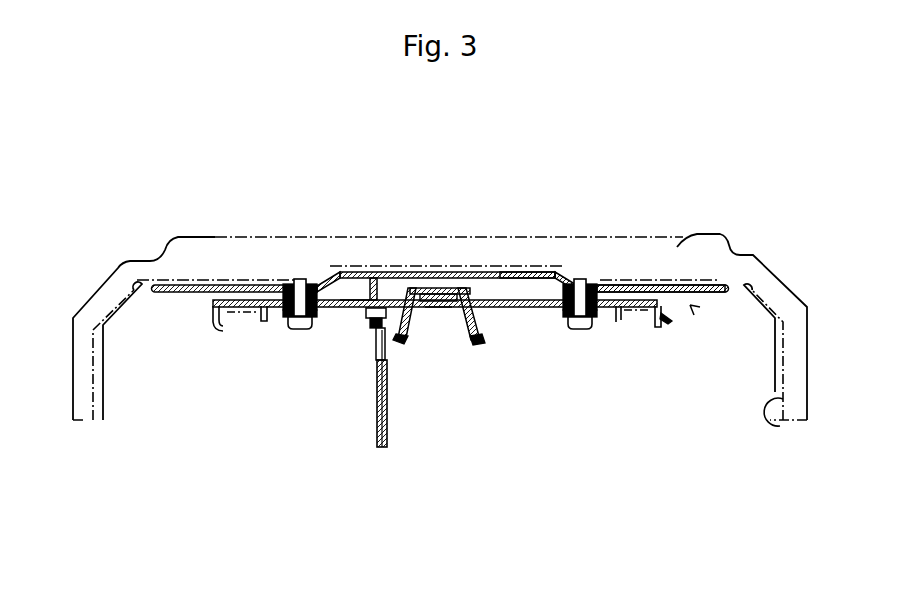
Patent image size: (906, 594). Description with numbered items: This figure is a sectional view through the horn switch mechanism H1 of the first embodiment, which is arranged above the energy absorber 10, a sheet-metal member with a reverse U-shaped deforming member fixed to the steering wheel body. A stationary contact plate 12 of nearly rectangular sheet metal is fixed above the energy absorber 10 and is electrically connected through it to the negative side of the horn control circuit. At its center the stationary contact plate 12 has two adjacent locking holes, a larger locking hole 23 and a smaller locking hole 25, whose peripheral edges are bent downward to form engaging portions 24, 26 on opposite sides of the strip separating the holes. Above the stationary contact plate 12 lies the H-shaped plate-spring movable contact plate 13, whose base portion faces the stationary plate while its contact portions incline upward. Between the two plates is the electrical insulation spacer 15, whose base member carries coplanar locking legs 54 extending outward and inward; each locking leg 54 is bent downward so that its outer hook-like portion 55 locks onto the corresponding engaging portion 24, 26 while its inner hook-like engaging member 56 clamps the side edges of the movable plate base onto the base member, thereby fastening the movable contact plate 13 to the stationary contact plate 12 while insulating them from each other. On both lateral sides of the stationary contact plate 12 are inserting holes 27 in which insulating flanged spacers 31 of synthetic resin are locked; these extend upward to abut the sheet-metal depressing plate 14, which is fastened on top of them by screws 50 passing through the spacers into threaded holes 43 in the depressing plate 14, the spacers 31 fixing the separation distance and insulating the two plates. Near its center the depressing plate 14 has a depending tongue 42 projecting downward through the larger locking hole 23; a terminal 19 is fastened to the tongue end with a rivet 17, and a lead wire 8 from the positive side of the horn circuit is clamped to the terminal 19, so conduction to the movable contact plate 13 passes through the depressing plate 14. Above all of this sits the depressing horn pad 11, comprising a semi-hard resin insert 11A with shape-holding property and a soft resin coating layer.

The lead wire 8 is at (390, 447).
The energy absorber 10 is at (210, 330).
The depressing horn pad 11 is at (692, 237).
The insert 11A is at (786, 428).
The stationary contact plate 12 is at (666, 318).
The movable contact plate 13 is at (432, 272).
The depressing plate 14 is at (642, 284).
The electrical insulation spacer 15 is at (440, 308).
The rivet 17 is at (347, 310).
The terminal 19 is at (370, 344).
The larger locking hole 23 is at (322, 300).
The engaging portion 24 is at (432, 312).
The smaller locking hole 25 is at (516, 272).
The engaging portion 26 is at (474, 348).
The inserting hole 27 is at (282, 318).
The flanged spacer 31 is at (318, 318).
The depending tongue 42 is at (370, 278).
The threaded hole 43 is at (283, 284).
The screw 50 is at (296, 328).
The locking leg 54 is at (412, 290).
The hook-like portion 55 is at (408, 344).
The hook-like engaging member 56 is at (424, 290).
The horn switch mechanism H1 is at (690, 305).